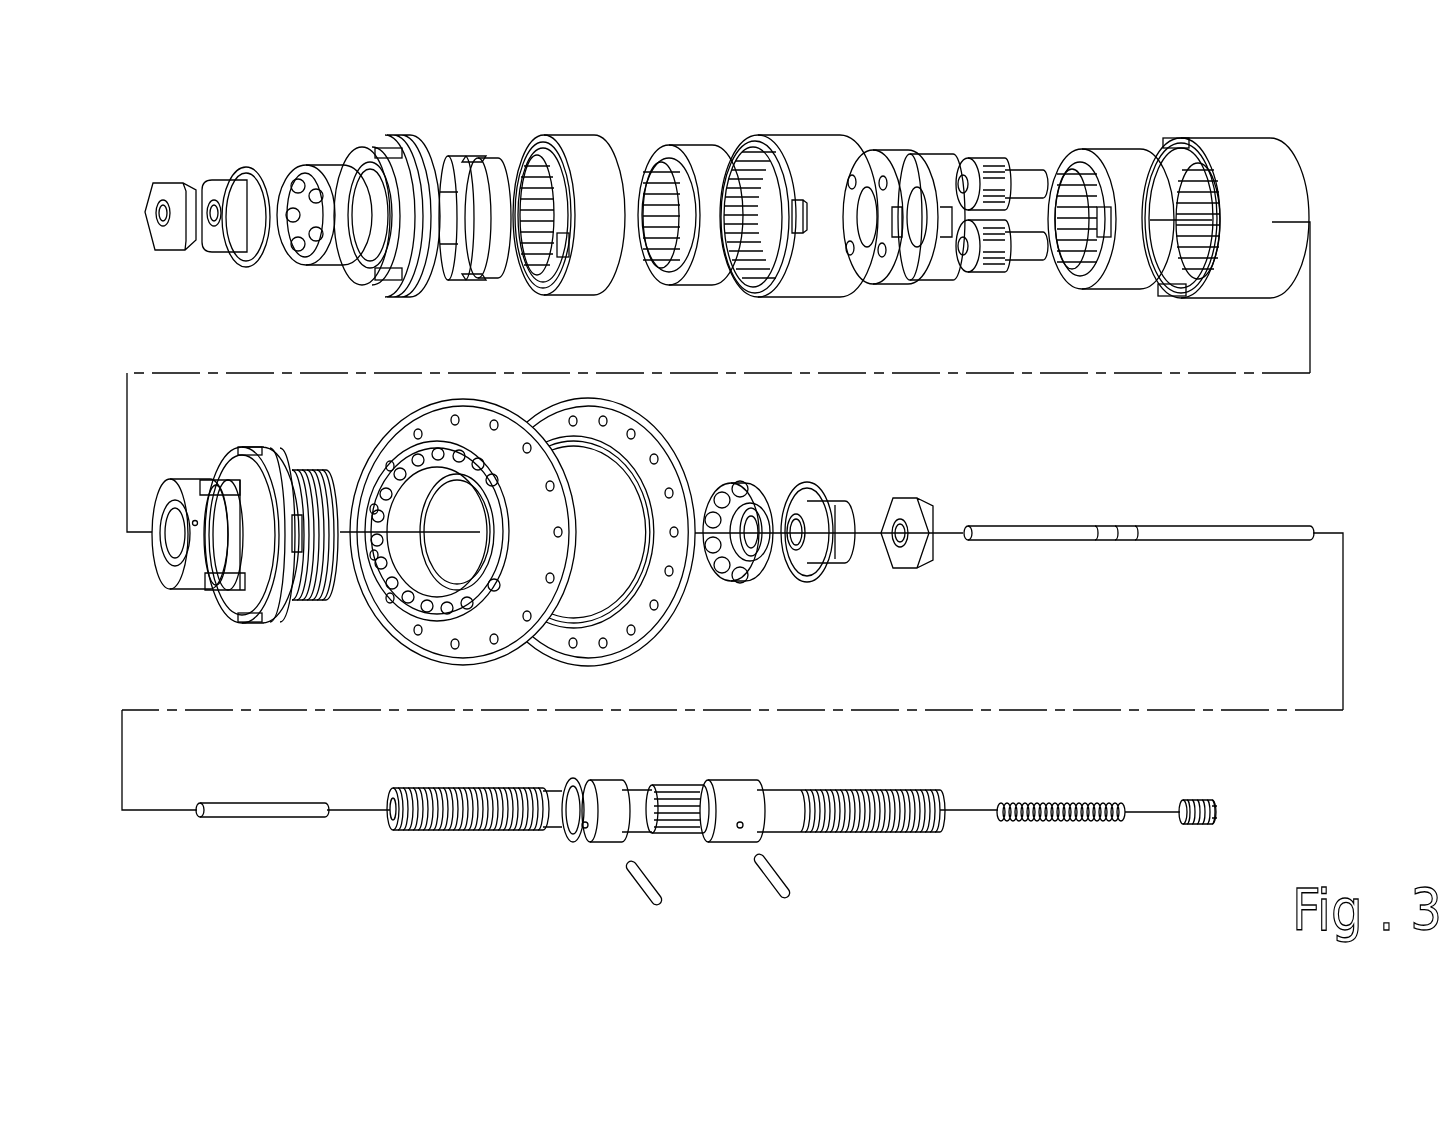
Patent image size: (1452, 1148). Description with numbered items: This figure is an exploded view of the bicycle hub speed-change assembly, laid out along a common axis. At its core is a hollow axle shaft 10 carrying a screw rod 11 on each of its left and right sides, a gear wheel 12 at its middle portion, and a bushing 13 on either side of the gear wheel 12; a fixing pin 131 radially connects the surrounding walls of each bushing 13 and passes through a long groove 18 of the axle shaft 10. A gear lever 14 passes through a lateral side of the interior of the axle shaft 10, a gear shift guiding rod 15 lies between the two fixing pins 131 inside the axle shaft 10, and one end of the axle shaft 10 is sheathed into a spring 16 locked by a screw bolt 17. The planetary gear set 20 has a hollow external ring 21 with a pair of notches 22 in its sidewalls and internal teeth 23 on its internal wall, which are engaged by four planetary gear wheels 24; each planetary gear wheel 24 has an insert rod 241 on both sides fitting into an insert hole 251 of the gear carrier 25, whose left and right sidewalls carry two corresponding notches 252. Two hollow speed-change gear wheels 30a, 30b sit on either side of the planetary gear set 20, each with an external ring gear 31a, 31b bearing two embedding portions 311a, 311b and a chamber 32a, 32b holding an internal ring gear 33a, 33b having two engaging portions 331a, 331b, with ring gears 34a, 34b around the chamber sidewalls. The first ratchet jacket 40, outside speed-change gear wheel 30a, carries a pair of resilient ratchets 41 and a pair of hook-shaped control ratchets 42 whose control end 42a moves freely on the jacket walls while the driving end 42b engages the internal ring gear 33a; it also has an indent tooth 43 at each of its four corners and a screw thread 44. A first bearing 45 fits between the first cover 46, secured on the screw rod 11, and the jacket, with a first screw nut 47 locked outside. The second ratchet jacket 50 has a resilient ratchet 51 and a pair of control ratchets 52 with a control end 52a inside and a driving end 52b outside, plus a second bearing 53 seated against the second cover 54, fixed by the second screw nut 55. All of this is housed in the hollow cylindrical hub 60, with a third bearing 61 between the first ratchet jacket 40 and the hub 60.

The hollow axle shaft 10 is at (666, 829).
The screw rod 11 is at (878, 830).
The gear wheel 12 is at (675, 790).
The bushing 13 is at (730, 790).
The fixing pin 131 is at (789, 884).
The gear lever 14 is at (1045, 530).
The gear shift guiding rod 15 is at (264, 810).
The spring 16 is at (1055, 822).
The screw bolt 17 is at (1188, 800).
The long groove 18 is at (573, 842).
The planetary gear set 20 is at (867, 230).
The external ring 21 is at (758, 295).
The notches 22 is at (797, 237).
The internal teeth 23 is at (761, 150).
The planetary gear wheel 24 is at (1002, 257).
The insert rod 241 is at (985, 272).
The gear carrier 25 is at (863, 165).
The insert hole 251 is at (883, 257).
The notches 252 is at (945, 237).
The speed-change gear wheel 30a is at (1178, 228).
The speed-change gear wheel 30b is at (625, 228).
The external ring gear 31a is at (1223, 163).
The external ring gear 31b is at (556, 145).
The embedding portion 311a is at (1166, 296).
The embedding portion 311b is at (647, 250).
The chamber 32a is at (1163, 253).
The chamber 32b is at (560, 275).
The internal ring gear 33a is at (1079, 160).
The internal ring gear 33b is at (651, 160).
The engaging portion 331a is at (1108, 207).
The engaging portion 331b is at (733, 220).
The ring gears 34a is at (1183, 296).
The ring gears 34b is at (555, 257).
The first ratchet jacket 40 is at (183, 587).
The resilient ratchets 41 is at (212, 482).
The control ratchets 42 is at (233, 529).
The control end 42a is at (237, 590).
The driving end 42b is at (238, 480).
The indent tooth 43 is at (258, 622).
The screw thread 44 is at (317, 602).
The first bearing 45 is at (731, 485).
The first cover 46 is at (813, 485).
The first screw nut 47 is at (918, 507).
The second ratchet jacket 50 is at (422, 205).
The resilient ratchet 51 is at (458, 278).
The control ratchets 52 is at (478, 217).
The control end 52a is at (481, 165).
The driving end 52b is at (480, 280).
The second bearing 53 is at (301, 172).
The second cover 54 is at (245, 183).
The second screw nut 55 is at (171, 190).
The hub 60 is at (617, 557).
The third bearing 61 is at (420, 603).